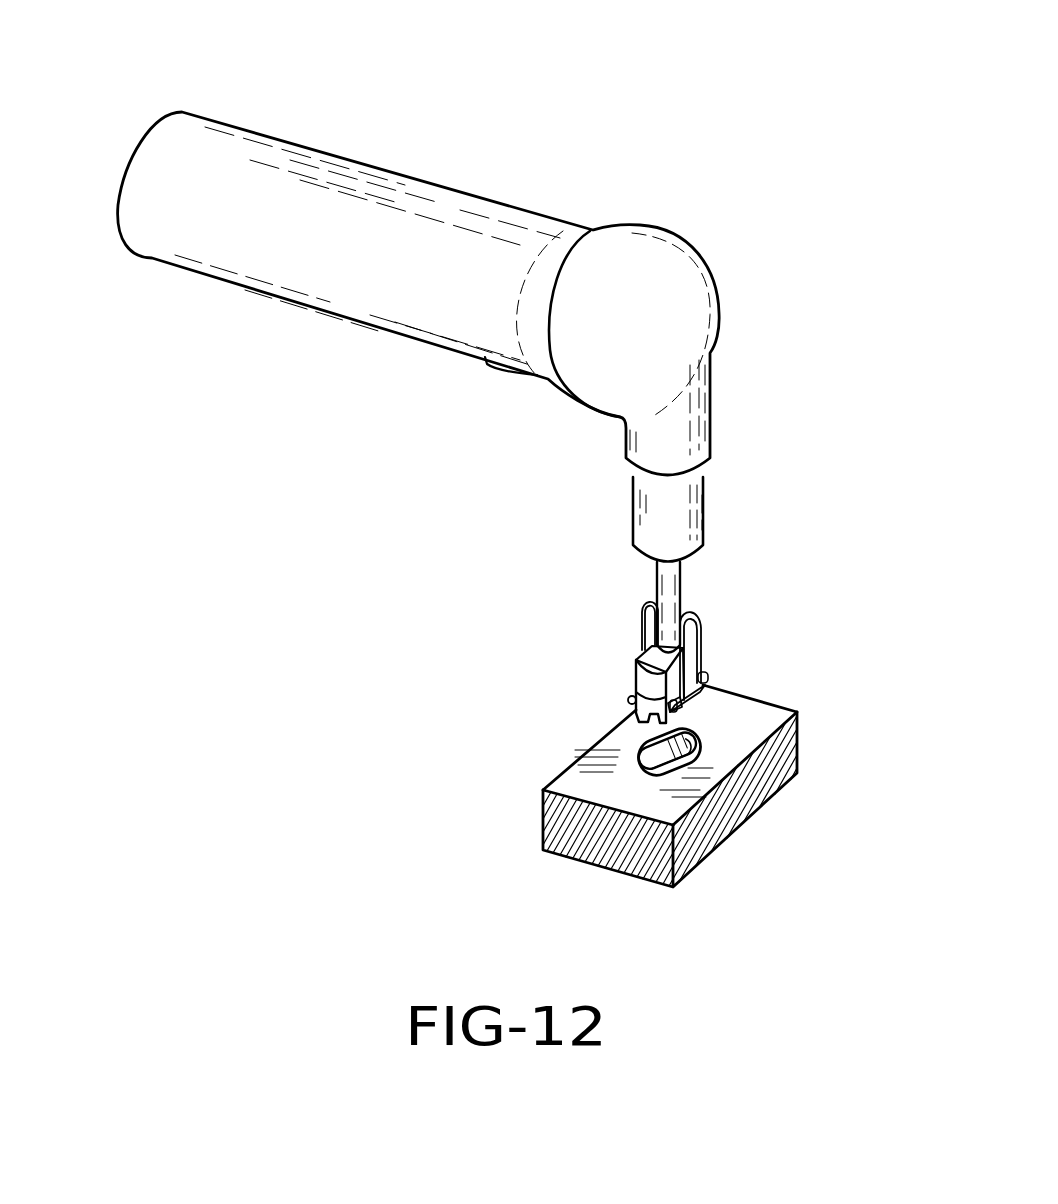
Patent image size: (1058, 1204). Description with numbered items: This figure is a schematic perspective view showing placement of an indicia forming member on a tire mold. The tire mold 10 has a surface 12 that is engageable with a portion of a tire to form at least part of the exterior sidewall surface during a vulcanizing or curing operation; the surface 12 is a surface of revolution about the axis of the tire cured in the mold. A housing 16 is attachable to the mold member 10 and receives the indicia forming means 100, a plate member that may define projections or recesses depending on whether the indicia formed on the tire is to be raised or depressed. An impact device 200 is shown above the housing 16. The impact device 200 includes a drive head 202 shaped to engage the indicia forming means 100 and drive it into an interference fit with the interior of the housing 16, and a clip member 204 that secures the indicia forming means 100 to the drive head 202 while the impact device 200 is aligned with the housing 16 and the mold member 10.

The impact device 200 is at (692, 176).
The drive head 202 is at (633, 697).
The clip member 204 is at (691, 621).
The indicia forming means 100 is at (647, 720).
The tire mold 10 is at (550, 855).
The surface 12 is at (737, 741).
The housing 16 is at (714, 721).